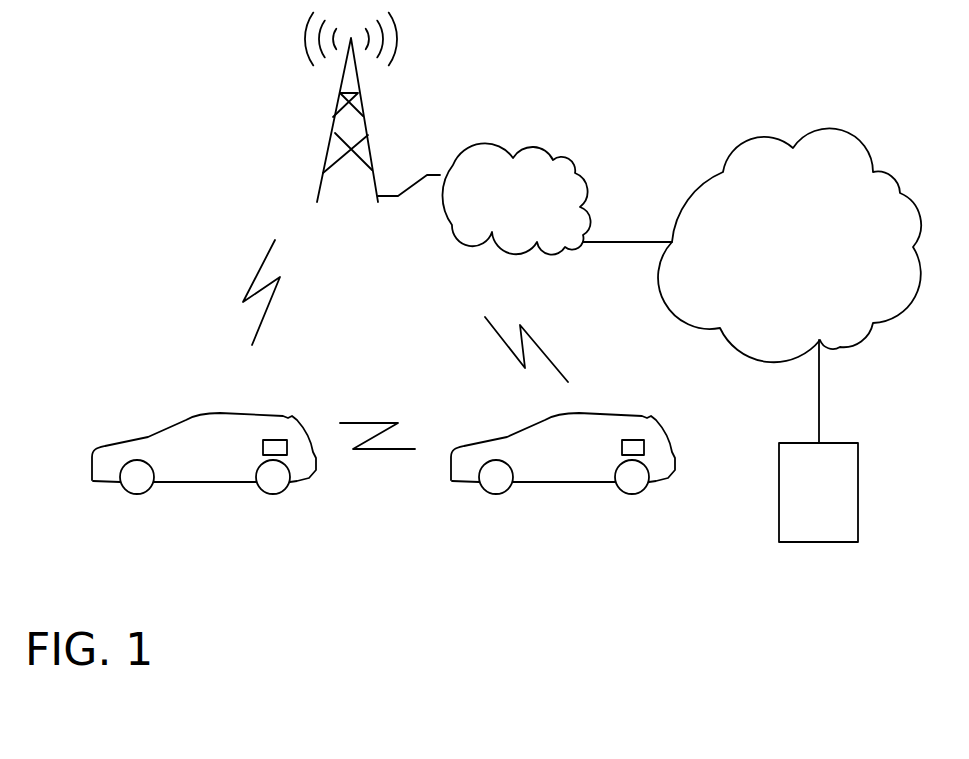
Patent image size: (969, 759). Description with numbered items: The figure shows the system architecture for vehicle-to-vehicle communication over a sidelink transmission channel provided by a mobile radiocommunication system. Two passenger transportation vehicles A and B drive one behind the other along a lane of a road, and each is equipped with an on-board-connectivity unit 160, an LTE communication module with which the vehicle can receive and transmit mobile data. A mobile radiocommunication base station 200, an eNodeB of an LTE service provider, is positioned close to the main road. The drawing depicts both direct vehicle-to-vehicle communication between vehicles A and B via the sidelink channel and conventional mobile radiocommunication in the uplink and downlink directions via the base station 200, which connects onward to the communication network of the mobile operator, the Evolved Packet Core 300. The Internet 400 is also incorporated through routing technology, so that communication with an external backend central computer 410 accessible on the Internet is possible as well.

The on-board-connectivity unit 160 is at (275, 440).
The mobile radiocommunication base station 200 is at (333, 125).
The Evolved Packet Core 300 is at (527, 170).
The Internet 400 is at (780, 170).
The backend central computer 410 is at (819, 523).
The transportation vehicle A is at (532, 441).
The transportation vehicle B is at (183, 437).